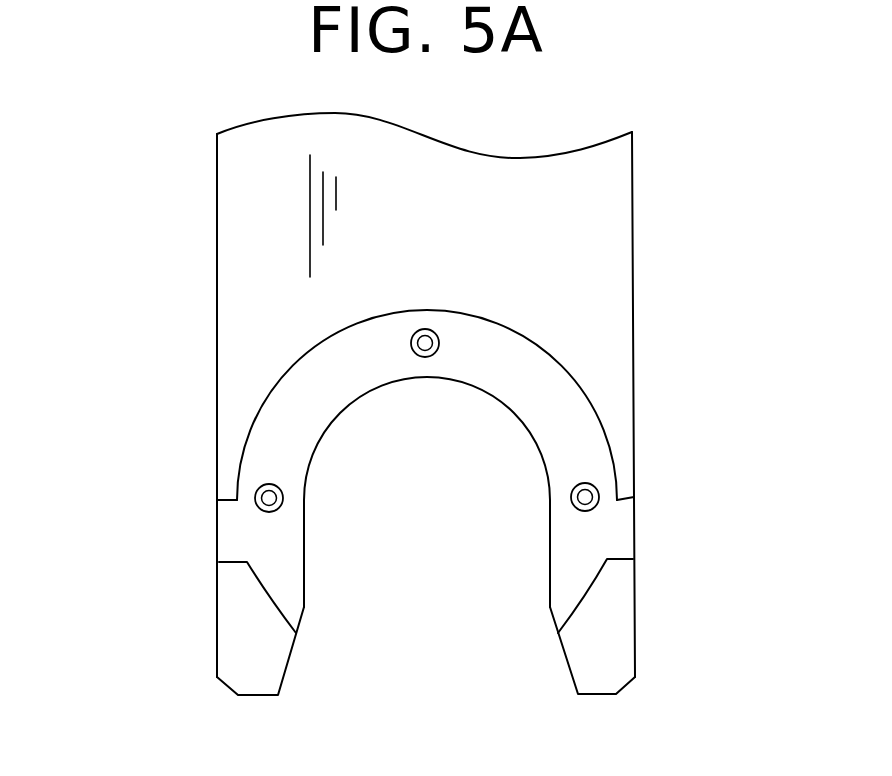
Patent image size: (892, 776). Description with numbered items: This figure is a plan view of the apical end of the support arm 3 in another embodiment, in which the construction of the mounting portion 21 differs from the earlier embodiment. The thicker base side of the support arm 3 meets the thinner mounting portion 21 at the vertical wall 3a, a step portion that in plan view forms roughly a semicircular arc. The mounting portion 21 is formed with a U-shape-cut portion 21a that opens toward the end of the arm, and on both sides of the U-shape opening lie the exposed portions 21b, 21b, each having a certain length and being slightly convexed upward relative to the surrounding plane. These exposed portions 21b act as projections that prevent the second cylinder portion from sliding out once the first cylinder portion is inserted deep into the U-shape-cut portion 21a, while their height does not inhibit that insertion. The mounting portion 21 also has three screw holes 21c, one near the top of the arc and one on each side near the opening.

The support arm 3 is at (217, 234).
The vertical wall 3a is at (490, 325).
The mounting portion 21 is at (200, 621).
The U-shape-cut portion 21a is at (549, 489).
The exposed portion 21b is at (255, 694).
The screw hole 21c is at (425, 340).